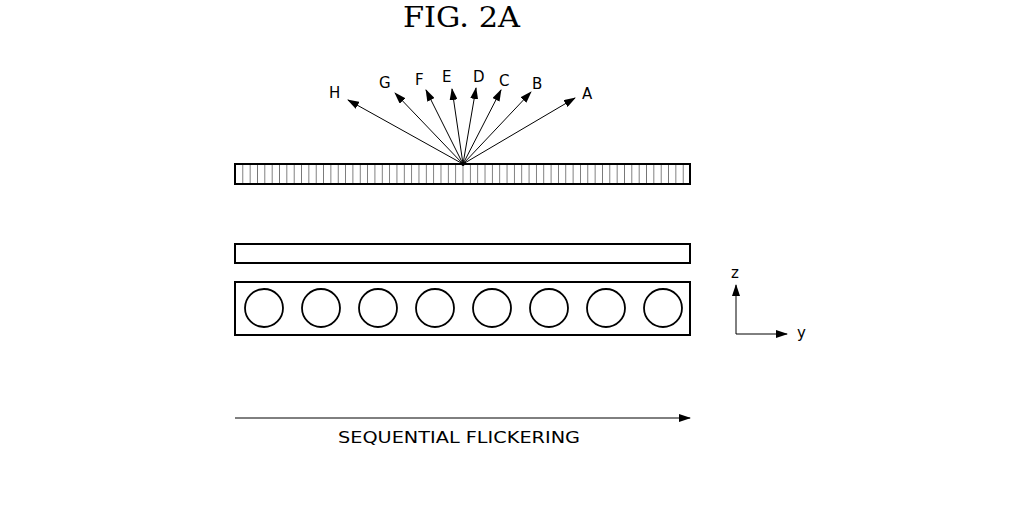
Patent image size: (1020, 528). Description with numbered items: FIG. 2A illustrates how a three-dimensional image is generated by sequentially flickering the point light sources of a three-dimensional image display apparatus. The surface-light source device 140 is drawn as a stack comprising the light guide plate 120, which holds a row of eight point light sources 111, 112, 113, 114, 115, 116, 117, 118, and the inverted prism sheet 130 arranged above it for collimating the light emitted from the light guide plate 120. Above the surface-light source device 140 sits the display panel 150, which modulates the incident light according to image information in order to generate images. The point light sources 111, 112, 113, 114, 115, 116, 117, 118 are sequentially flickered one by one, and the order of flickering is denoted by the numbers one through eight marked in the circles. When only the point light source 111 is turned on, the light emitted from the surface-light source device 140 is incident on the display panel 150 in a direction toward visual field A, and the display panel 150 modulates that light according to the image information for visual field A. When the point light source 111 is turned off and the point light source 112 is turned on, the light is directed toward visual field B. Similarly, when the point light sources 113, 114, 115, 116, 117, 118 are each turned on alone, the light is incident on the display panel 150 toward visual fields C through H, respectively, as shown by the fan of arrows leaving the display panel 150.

The display panel 150 is at (235, 172).
The surface-light source device 140 is at (160, 250).
The inverted prism sheet 130 is at (235, 253).
The light guide plate 120 is at (235, 308).
The point light source 111 is at (264, 327).
The point light source 112 is at (321, 327).
The point light source 113 is at (378, 327).
The point light source 114 is at (435, 327).
The point light source 115 is at (492, 327).
The point light source 116 is at (549, 327).
The point light source 117 is at (606, 327).
The point light source 118 is at (663, 327).